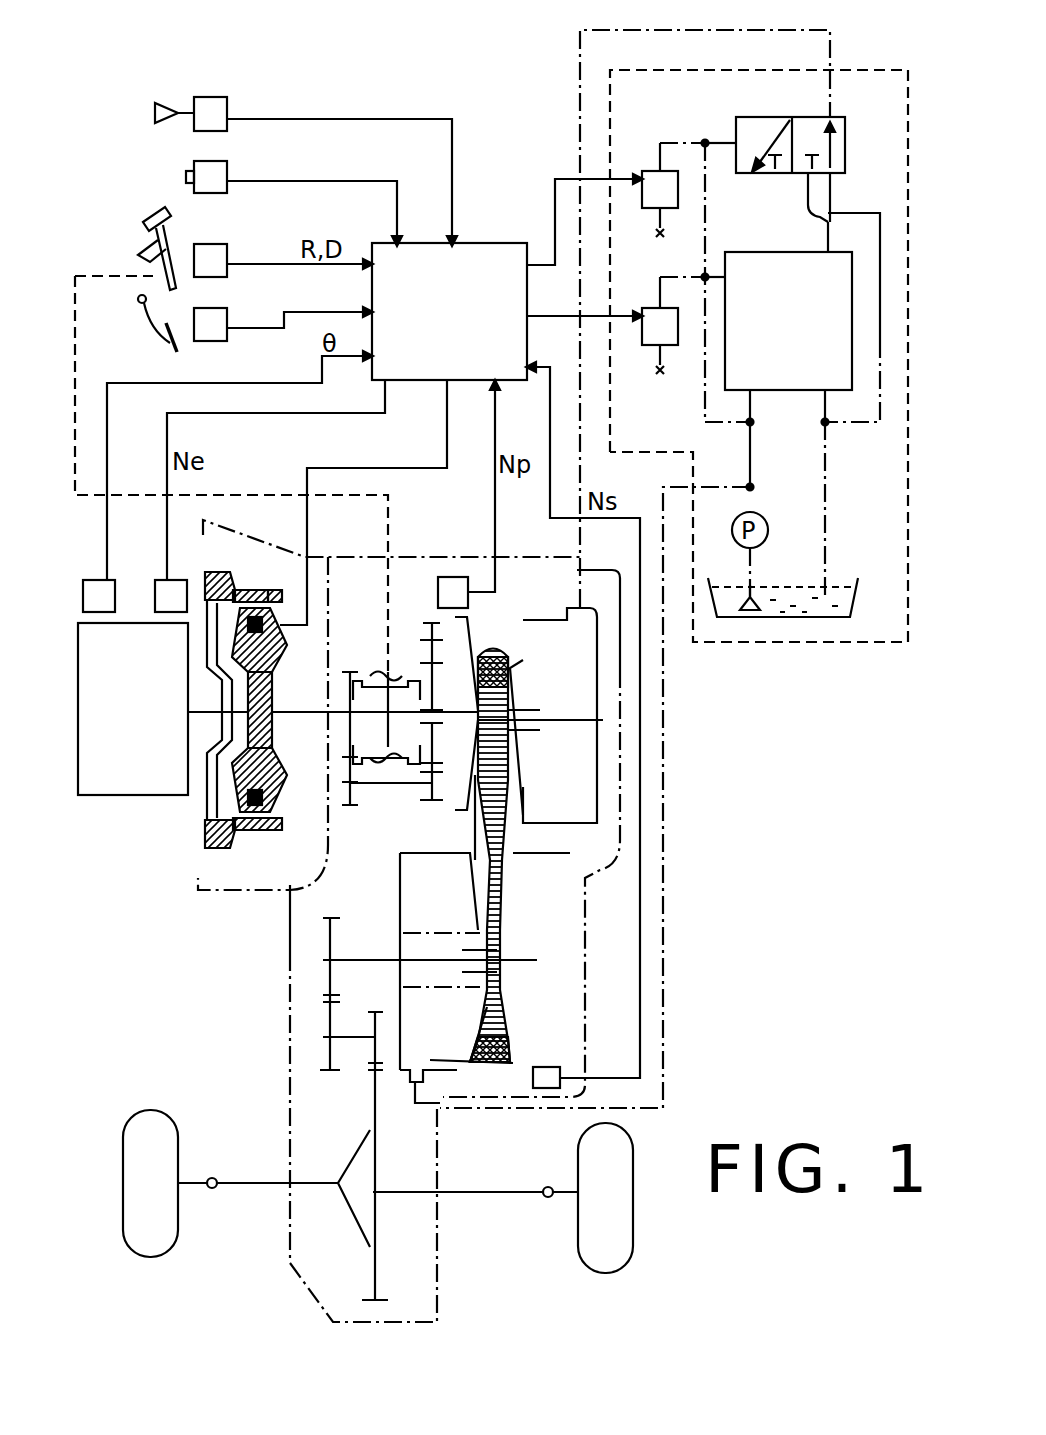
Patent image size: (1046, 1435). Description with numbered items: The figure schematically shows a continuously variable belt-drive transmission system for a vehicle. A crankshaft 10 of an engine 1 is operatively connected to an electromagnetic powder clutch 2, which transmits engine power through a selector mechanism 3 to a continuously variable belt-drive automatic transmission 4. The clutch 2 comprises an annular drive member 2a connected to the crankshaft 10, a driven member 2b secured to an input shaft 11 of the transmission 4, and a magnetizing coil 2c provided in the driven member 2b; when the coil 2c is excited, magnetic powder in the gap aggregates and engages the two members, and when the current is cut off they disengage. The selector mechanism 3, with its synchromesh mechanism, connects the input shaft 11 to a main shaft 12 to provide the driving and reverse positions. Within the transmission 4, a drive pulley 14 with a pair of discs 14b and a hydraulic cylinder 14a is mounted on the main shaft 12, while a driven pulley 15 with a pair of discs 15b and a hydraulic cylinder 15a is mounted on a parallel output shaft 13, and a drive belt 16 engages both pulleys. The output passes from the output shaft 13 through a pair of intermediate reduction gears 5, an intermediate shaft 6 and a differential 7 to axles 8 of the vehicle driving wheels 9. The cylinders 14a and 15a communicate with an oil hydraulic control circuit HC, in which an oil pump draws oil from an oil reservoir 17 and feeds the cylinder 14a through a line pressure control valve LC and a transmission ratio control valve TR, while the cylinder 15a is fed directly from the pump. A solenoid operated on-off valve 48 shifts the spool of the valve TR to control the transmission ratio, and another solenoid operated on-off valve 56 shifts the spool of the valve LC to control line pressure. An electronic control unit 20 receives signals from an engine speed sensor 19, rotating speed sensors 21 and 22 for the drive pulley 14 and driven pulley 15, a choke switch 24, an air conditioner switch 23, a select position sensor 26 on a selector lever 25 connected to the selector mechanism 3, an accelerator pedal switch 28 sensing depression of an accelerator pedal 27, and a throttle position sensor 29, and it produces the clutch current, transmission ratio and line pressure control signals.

The engine 1 is at (110, 797).
The electromagnetic powder clutch 2 is at (232, 700).
The annular drive member 2a is at (204, 582).
The driven member 2b is at (262, 652).
The magnetizing coil 2c is at (270, 590).
The selector mechanism 3 is at (372, 660).
The continuously variable belt-drive automatic transmission 4 is at (505, 633).
The intermediate reduction gears 5 is at (360, 893).
The intermediate shaft 6 is at (352, 1037).
The differential 7 is at (358, 1178).
The axles 8 is at (260, 1182).
The vehicle driving wheels 9 is at (168, 1227).
The crankshaft 10 is at (207, 713).
The input shaft 11 is at (292, 720).
The main shaft 12 is at (463, 720).
The output shaft 13 is at (358, 930).
The drive pulley 14 is at (467, 645).
The hydraulic cylinder 14a is at (570, 780).
The discs 14b is at (515, 650).
The driven pulley 15 is at (506, 865).
The hydraulic cylinder 15a is at (422, 878).
The discs 15b is at (482, 1010).
The drive belt 16 is at (472, 833).
The oil reservoir 17 is at (862, 588).
The engine speed sensor 19 is at (158, 578).
The electronic control unit 20 is at (510, 243).
The rotating speed sensor 21 is at (437, 597).
The rotating speed sensor 22 is at (553, 1067).
The air conditioner switch 23 is at (227, 172).
The choke switch 24 is at (227, 106).
The selector lever 25 is at (150, 226).
The select position sensor 26 is at (227, 256).
The accelerator pedal 27 is at (152, 333).
The accelerator pedal switch 28 is at (227, 322).
The throttle position sensor 29 is at (97, 578).
The solenoid operated on-off valve 48 is at (645, 170).
The solenoid operated on-off valve 56 is at (645, 308).
The oil hydraulic control circuit HC is at (870, 85).
The transmission ratio control valve TR is at (790, 114).
The line pressure control valve LC is at (771, 251).